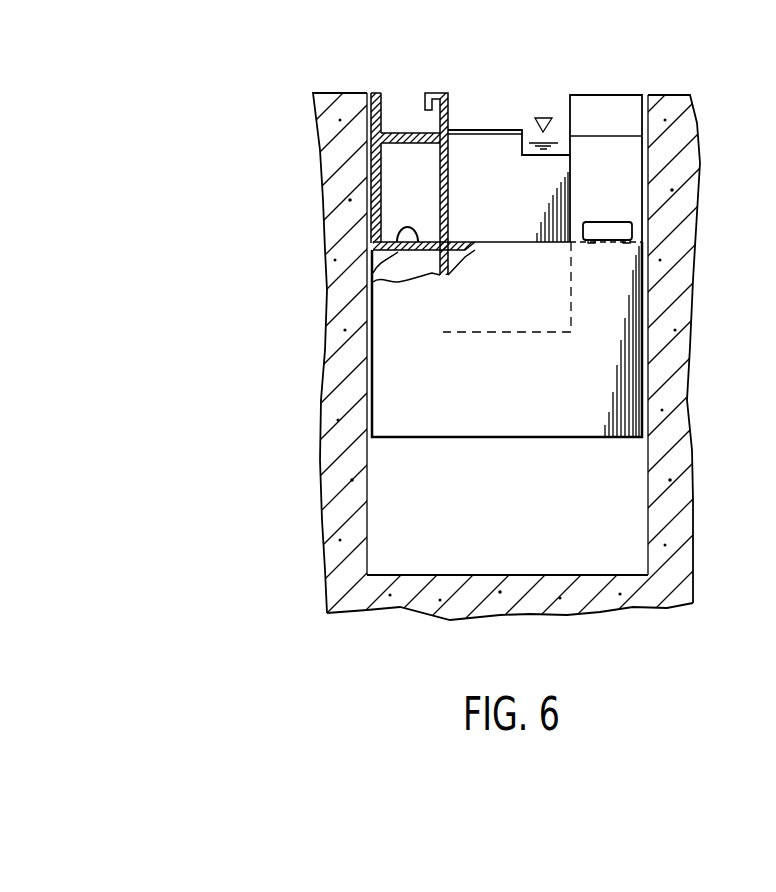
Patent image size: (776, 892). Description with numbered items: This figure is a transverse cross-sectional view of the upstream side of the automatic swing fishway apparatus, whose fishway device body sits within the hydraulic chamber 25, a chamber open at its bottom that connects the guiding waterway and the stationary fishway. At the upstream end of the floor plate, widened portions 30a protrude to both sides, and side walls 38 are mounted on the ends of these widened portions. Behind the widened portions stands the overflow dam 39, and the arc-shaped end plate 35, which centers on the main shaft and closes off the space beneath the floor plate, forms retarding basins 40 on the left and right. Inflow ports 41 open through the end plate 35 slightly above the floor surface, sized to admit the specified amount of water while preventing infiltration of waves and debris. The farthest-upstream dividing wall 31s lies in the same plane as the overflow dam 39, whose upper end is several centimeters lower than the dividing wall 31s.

The hydraulic chamber 25 is at (457, 562).
The widened portions 30a is at (365, 282).
The dividing wall 31s is at (483, 153).
The end plate 35 is at (607, 110).
The side walls 38 is at (372, 246).
The overflow dam 39 is at (405, 133).
The retarding basins 40 is at (412, 178).
The inflow ports 41 is at (607, 224).